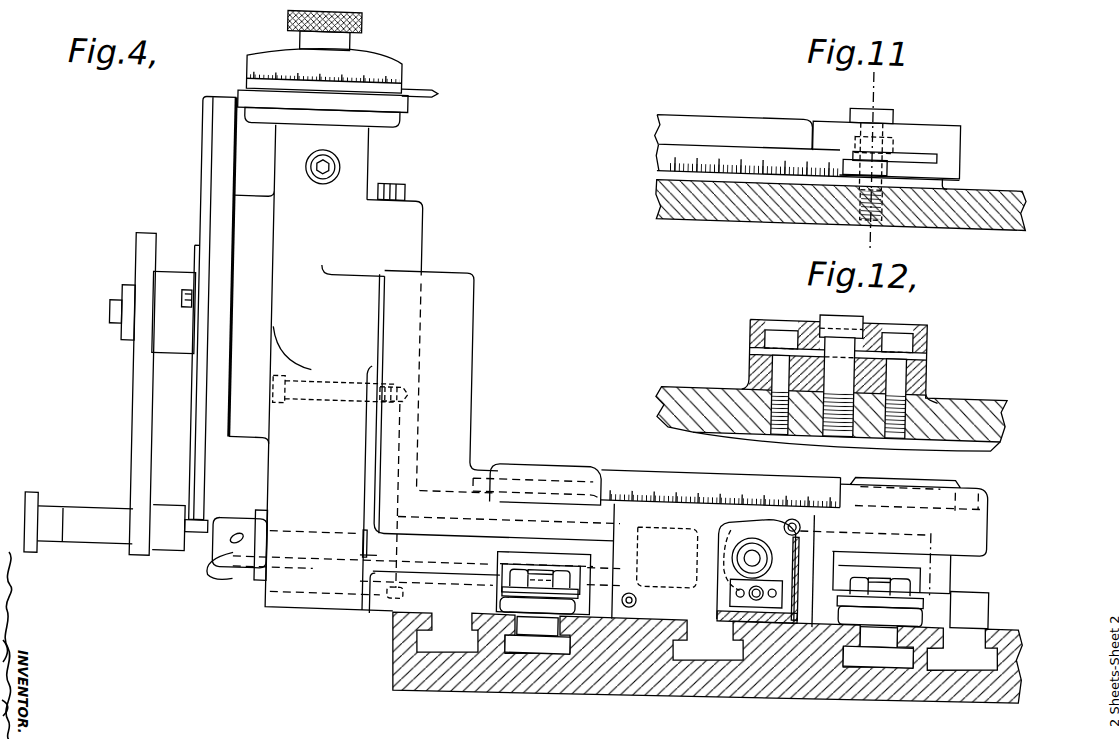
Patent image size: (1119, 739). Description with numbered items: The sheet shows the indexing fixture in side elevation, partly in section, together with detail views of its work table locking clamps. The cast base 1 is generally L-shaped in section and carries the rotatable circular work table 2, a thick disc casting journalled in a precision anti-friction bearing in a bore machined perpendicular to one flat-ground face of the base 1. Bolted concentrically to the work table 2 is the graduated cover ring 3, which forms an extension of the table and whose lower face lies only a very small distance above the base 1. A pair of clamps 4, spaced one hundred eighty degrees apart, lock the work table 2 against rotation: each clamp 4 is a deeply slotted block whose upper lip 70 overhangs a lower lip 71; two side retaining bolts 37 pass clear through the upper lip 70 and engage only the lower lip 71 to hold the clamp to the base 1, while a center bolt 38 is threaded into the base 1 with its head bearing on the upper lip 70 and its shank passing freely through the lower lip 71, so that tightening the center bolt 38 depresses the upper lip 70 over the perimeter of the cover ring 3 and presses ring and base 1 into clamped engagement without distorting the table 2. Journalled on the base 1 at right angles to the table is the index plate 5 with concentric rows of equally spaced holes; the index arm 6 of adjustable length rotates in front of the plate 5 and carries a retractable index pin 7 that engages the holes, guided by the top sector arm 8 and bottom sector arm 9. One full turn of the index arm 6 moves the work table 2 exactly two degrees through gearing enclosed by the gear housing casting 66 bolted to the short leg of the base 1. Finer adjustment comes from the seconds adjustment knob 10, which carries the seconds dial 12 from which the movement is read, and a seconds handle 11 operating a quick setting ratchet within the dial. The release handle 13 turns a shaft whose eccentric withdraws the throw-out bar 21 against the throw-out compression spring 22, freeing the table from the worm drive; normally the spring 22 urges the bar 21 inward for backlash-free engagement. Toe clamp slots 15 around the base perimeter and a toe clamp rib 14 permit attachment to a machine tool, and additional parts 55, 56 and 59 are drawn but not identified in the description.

In FIG. 4, the base 1 is at (978, 523).
In FIG. 11, the base 1 is at (1027, 202).
In FIG. 12, the base 1 is at (1001, 416).
In FIG. 4, the work table 2 is at (847, 466).
In FIG. 4, the graduated cover ring 3 is at (692, 473).
In FIG. 11, the graduated cover ring 3 is at (744, 131).
In FIG. 11, the clamp 4 is at (950, 144).
In FIG. 12, the clamp 4 is at (932, 368).
In FIG. 4, the index plate 5 is at (214, 188).
In FIG. 4, the index arm 6 is at (137, 422).
In FIG. 4, the index pin 7 is at (194, 547).
In FIG. 4, the top sector arm 8 is at (201, 225).
In FIG. 4, the bottom sector arm 9 is at (198, 469).
In FIG. 4, the seconds adjustment knob 10 is at (280, 31).
In FIG. 4, the seconds handle 11 is at (432, 99).
In FIG. 4, the seconds dial 12 is at (395, 81).
In FIG. 11, the seconds dial 12 is at (867, 84).
In FIG. 4, the release handle 13 is at (236, 586).
In FIG. 4, the toe clamp rib 14 is at (466, 281).
In FIG. 4, the toe clamp slots 15 is at (962, 572).
In FIG. 4, the throw-out bar 21 is at (743, 528).
In FIG. 4, the throw-out compression spring 22 is at (761, 546).
In FIG. 11, the side retaining bolt 37 is at (893, 141).
In FIG. 12, the side retaining bolt 37 is at (788, 326).
In FIG. 11, the center bolt 38 is at (889, 118).
In FIG. 12, the center bolt 38 is at (860, 317).
In FIG. 4, the adjusting screw 55 is at (108, 320).
In FIG. 4, the screw bracket 56 is at (126, 299).
In FIG. 4, the handle 59 is at (32, 517).
In FIG. 4, the gear housing casting 66 is at (358, 190).
In FIG. 11, the upper lip 70 is at (821, 129).
In FIG. 12, the upper lip 70 is at (749, 333).
In FIG. 11, the lower lip 71 is at (849, 166).
In FIG. 12, the lower lip 71 is at (750, 365).